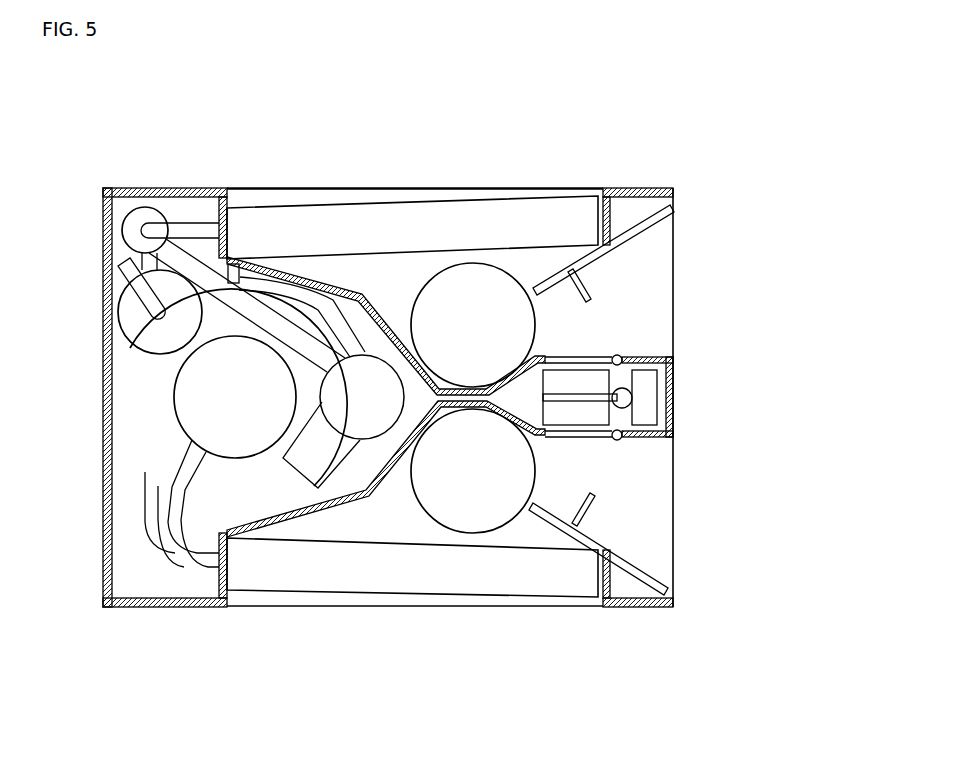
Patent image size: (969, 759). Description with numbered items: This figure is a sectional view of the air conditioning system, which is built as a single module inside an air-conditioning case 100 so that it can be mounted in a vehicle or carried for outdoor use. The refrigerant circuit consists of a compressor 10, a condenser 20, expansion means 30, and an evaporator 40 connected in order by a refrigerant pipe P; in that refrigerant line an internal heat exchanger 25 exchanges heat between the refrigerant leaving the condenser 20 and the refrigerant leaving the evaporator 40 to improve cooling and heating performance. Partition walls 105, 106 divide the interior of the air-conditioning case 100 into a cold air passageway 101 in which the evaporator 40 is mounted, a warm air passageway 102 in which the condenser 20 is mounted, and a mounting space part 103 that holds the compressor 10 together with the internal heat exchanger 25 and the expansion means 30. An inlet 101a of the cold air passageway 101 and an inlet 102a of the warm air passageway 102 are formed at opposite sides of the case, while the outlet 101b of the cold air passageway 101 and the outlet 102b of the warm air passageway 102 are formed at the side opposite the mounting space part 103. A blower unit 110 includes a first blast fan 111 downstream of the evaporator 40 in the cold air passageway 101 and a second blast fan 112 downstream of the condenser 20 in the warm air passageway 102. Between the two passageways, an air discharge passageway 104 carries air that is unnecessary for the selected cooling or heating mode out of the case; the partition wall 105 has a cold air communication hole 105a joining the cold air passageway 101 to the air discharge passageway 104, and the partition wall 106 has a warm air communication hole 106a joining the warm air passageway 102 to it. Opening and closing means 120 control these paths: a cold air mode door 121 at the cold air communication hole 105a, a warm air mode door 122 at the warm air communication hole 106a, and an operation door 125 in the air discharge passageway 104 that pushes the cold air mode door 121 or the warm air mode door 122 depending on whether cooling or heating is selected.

The air-conditioning case 100 is at (643, 188).
The cold air passageway 101 is at (603, 280).
The inlet of the cold air passageway 101a is at (325, 197).
The outlet of the cold air passageway 101b is at (647, 273).
The warm air passageway 102 is at (420, 528).
The inlet of the warm air passageway 102a is at (358, 596).
The outlet of the warm air passageway 102b is at (660, 548).
The air discharge passageway 104 is at (623, 360).
The partition wall 105 is at (558, 368).
The cold air communication hole 105a is at (625, 407).
The partition wall 106 is at (590, 490).
The warm air communication hole 106a is at (555, 437).
The blower unit 110 is at (477, 672).
The first blast fan 111 is at (437, 355).
The second blast fan 112 is at (443, 495).
The opening and closing means 120 is at (779, 378).
The cold air mode door 121 is at (647, 400).
The warm air mode door 122 is at (580, 455).
The operation door 125 is at (632, 406).
The compressor 10 is at (145, 415).
The condenser 20 is at (265, 575).
The internal heat exchanger 25 is at (143, 213).
The expansion means 30 is at (310, 448).
The evaporator 40 is at (276, 230).
The mounting space part 103 is at (128, 512).
The refrigerant pipe P is at (162, 560).